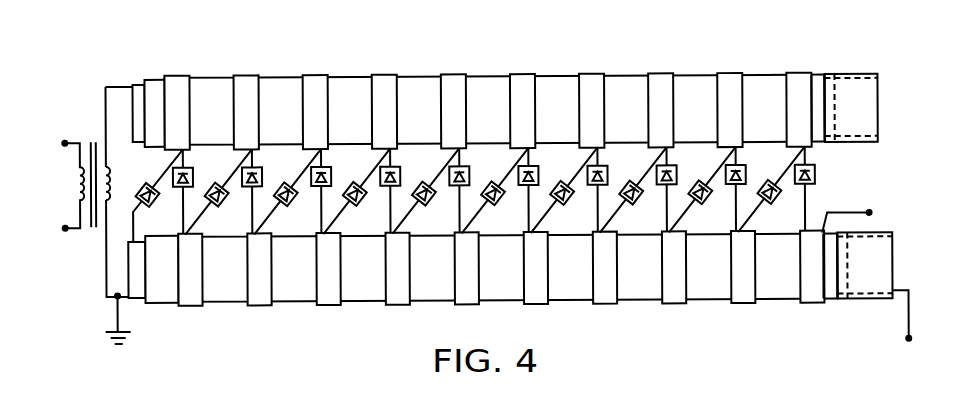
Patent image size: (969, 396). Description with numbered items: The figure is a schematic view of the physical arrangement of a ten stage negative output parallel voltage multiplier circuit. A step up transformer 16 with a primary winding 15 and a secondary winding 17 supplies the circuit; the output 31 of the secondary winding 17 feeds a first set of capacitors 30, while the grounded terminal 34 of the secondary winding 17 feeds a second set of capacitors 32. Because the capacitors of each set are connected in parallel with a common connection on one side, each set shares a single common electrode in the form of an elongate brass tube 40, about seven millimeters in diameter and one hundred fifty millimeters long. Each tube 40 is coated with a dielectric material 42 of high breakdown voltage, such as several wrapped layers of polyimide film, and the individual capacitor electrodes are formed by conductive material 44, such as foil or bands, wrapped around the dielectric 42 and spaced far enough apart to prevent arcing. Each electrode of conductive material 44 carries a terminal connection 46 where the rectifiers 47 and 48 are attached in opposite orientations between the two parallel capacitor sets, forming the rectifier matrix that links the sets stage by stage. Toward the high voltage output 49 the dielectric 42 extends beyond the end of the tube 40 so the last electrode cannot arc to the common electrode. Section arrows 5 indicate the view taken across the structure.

The section line of FIG. 5 is at (368, 57).
The primary winding 15 is at (80, 198).
The step up transformer 16 is at (85, 122).
The secondary winding 17 is at (110, 183).
The first set of capacitors 30 is at (555, 62).
The output of the secondary winding 31 is at (114, 87).
The second set of capacitors 32 is at (586, 316).
The grounded terminal 34 is at (114, 299).
The brass tube 40 is at (843, 98).
The dielectric material 42 is at (825, 75).
The conductive material 44 is at (513, 78).
The terminal connection 46 is at (254, 157).
The rectifier 47 is at (362, 210).
The rectifier 48 is at (328, 175).
The output 49 is at (870, 214).